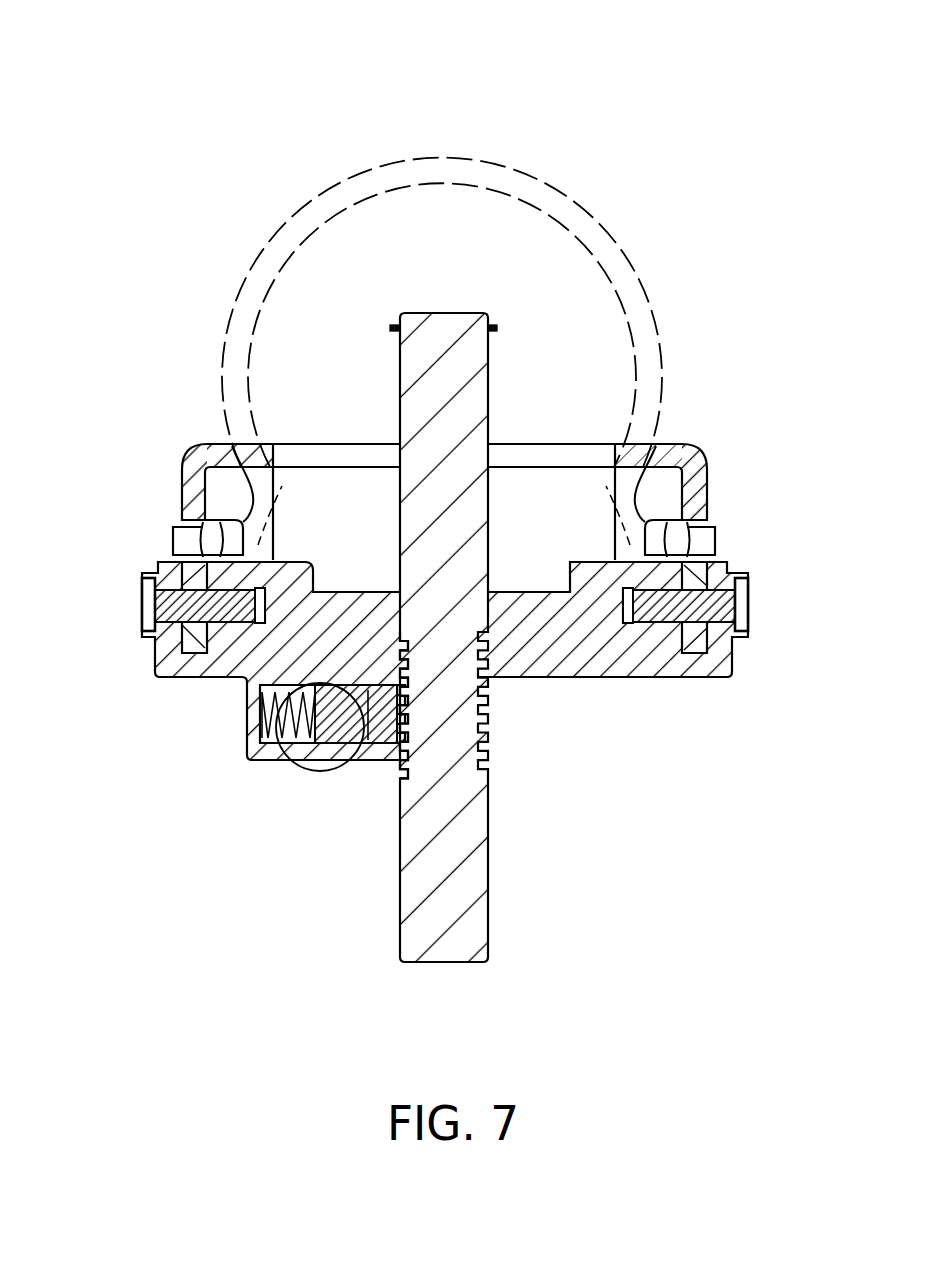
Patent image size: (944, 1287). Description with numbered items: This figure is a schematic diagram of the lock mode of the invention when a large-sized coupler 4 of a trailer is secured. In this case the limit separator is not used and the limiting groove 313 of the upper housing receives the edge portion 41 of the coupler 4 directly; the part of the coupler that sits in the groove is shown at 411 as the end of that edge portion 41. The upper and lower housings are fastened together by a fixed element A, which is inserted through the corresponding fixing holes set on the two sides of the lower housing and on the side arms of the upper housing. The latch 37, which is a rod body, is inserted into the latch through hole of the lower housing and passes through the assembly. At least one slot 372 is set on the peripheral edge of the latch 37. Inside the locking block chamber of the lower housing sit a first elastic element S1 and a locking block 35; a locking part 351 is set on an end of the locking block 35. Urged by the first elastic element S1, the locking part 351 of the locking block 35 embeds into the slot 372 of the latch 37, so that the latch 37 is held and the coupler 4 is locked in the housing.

The coupler 4 is at (503, 152).
The edge portion 41 is at (372, 172).
The ring hook end 411 is at (170, 540).
The limiting groove 313 is at (182, 520).
The fixed element A is at (158, 607).
The first elastic element S1 is at (262, 745).
The locking block 35 is at (307, 747).
The locking part 351 is at (405, 690).
The latch 37 is at (480, 817).
The slot 372 is at (400, 760).